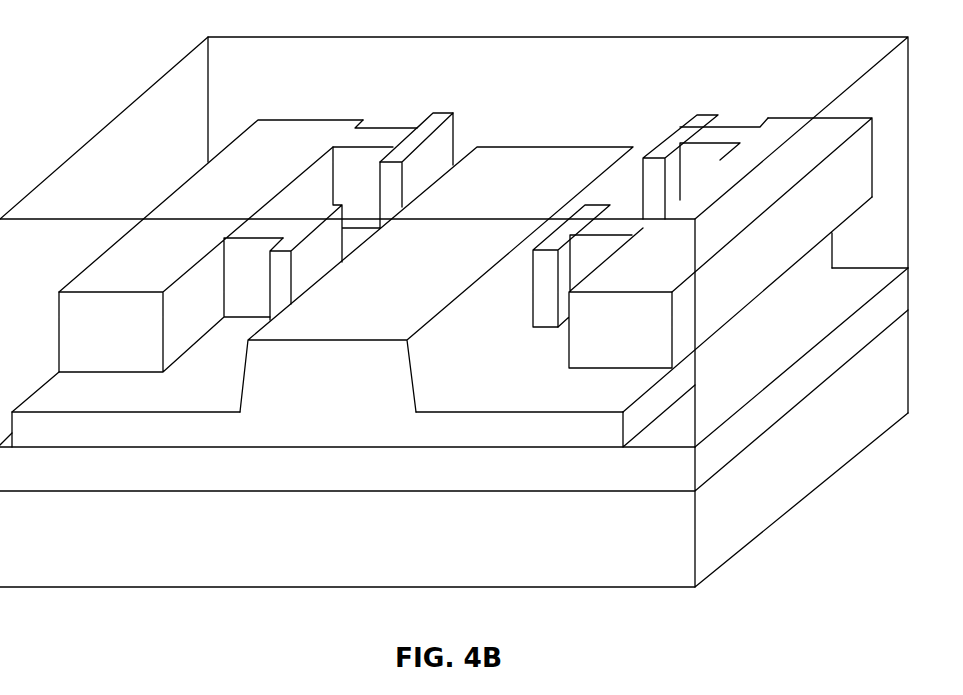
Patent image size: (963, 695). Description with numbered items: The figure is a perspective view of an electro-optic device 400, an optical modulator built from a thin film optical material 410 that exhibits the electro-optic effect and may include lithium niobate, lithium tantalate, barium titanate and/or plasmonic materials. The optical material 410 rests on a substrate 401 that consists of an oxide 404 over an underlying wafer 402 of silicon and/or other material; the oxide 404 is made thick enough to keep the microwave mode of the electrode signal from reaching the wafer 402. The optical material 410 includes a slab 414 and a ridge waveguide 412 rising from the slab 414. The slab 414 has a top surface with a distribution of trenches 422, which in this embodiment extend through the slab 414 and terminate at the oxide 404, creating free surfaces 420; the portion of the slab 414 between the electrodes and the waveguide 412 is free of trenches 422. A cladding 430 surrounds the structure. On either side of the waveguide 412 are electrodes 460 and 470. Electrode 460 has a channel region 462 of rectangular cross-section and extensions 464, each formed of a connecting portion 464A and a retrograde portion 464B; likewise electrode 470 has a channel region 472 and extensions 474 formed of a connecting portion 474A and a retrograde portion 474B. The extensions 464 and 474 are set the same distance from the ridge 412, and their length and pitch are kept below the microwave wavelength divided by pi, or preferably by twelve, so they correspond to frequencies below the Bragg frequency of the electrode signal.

The electro-optic device 400 is at (97, 47).
The substrate 401 is at (772, 556).
The wafer 402 is at (378, 541).
The oxide 404 is at (378, 480).
The optical material 410 is at (335, 421).
The ridge waveguide 412 is at (391, 436).
The slab 414 is at (593, 447).
The free surface 420 is at (794, 324).
The trench 422 is at (723, 361).
The cladding 430 is at (107, 123).
The electrode 460 is at (68, 240).
The channel region 462 is at (133, 340).
The extension 464 is at (398, 94).
The connecting portion 464A is at (382, 112).
The retrograde portion 464B is at (463, 129).
The electrode 470 is at (826, 69).
The channel region 472 is at (638, 343).
The extension 474 is at (725, 84).
The connecting portion 474A is at (740, 99).
The retrograde portion 474B is at (645, 125).